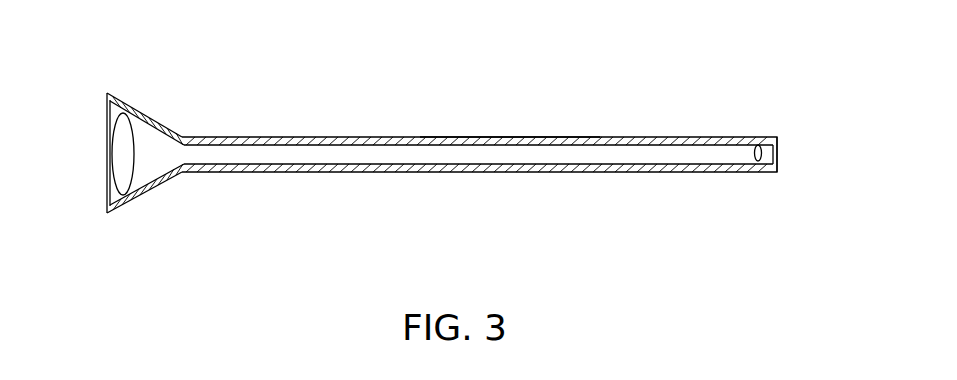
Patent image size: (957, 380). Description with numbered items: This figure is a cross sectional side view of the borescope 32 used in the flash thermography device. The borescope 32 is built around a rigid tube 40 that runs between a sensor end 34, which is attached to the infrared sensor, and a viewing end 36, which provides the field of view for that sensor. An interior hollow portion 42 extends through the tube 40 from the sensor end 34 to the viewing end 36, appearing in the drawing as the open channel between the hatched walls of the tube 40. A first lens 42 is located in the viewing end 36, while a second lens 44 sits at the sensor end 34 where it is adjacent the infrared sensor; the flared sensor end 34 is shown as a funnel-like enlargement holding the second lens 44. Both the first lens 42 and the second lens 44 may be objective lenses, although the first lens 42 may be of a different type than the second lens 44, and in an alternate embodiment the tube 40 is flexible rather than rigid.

The borescope 32 is at (290, 175).
The sensor end 34 is at (106, 94).
The viewing end 36 is at (795, 132).
The rigid tube 40 is at (507, 137).
The first lens 42 is at (416, 153).
The second lens 44 is at (134, 157).